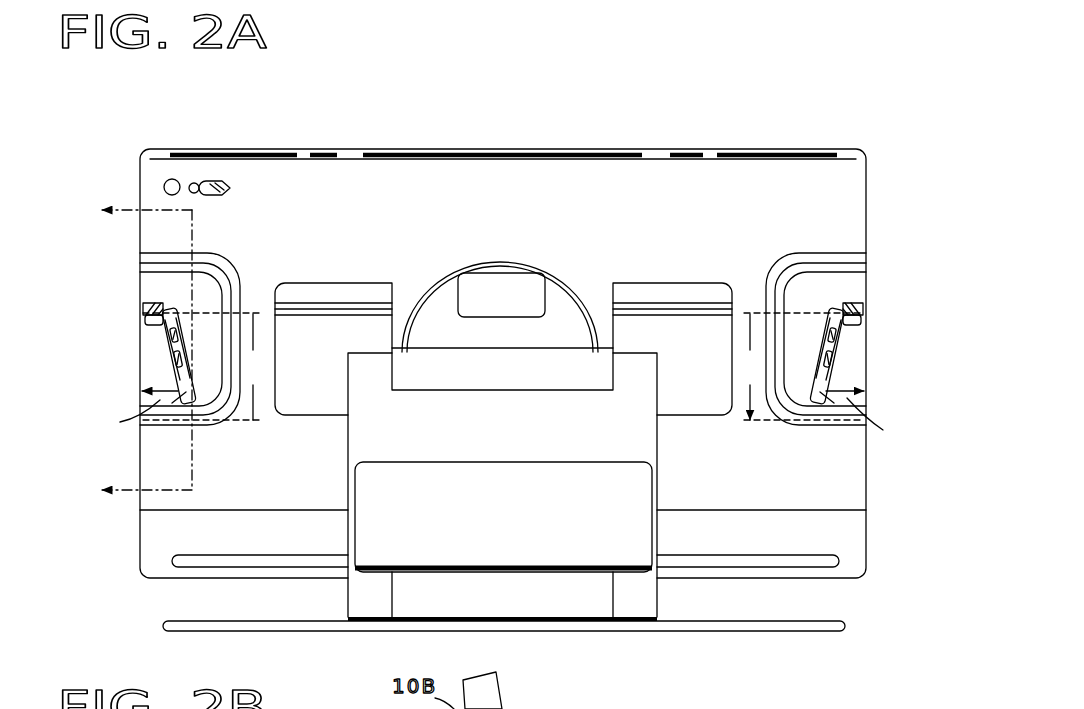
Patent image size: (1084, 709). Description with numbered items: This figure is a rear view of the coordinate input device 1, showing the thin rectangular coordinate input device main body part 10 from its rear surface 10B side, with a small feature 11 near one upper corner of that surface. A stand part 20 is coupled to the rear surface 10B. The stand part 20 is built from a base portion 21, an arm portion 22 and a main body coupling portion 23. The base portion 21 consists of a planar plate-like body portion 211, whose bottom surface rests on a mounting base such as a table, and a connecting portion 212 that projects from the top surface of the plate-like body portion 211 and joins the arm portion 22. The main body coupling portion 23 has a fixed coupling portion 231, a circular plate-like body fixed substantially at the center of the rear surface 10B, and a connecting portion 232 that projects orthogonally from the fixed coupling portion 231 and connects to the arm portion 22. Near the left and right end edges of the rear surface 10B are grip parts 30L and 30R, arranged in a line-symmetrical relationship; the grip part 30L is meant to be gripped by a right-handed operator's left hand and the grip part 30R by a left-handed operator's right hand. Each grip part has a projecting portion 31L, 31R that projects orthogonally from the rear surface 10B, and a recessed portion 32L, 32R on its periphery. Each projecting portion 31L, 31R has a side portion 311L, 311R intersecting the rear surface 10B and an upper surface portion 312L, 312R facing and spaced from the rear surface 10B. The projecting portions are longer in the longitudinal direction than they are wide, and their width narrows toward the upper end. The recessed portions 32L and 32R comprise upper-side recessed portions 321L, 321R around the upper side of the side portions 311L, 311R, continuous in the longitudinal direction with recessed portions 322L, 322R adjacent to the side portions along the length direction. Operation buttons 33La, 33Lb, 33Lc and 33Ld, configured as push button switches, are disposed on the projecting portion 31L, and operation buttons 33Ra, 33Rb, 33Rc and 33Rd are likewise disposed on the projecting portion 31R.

The coordinate input device 1 is at (311, 146).
The coordinate input device main body part 10 is at (444, 146).
The rear surface 10B is at (747, 178).
The camera / sensor unit 11 is at (240, 160).
The stand part 20 is at (521, 548).
The base portion 21 is at (768, 690).
The plate-like body portion 211 is at (738, 625).
The connecting portion 212 is at (598, 607).
The arm portion 22 is at (557, 453).
The main body coupling portion 23 is at (667, 104).
The fixed coupling portion 231 is at (555, 300).
The connecting portion 232 is at (583, 360).
The grip part 30R is at (156, 379).
The grip part 30L is at (850, 379).
The projecting portion 31R is at (164, 341).
The projecting portion 31L is at (842, 341).
The side portion 311R is at (183, 400).
The side portion 311L is at (823, 400).
The upper surface portion 312R is at (151, 366).
The upper surface portion 312L is at (855, 366).
The recessed portion 32R is at (298, 210).
The recessed portion 32L is at (706, 210).
The upper-side recessed portion 321R is at (153, 282).
The upper-side recessed portion 321L is at (853, 282).
The recessed portion 322R is at (198, 350).
The recessed portion 322L is at (808, 350).
The operation button 33Ra is at (147, 303).
The operation button 33Rb is at (144, 317).
The operation button 33Rc is at (177, 340).
The operation button 33Rd is at (182, 357).
The operation button 33La is at (859, 303).
The operation button 33Lb is at (862, 317).
The operation button 33Lc is at (829, 340).
The operation button 33Ld is at (824, 357).